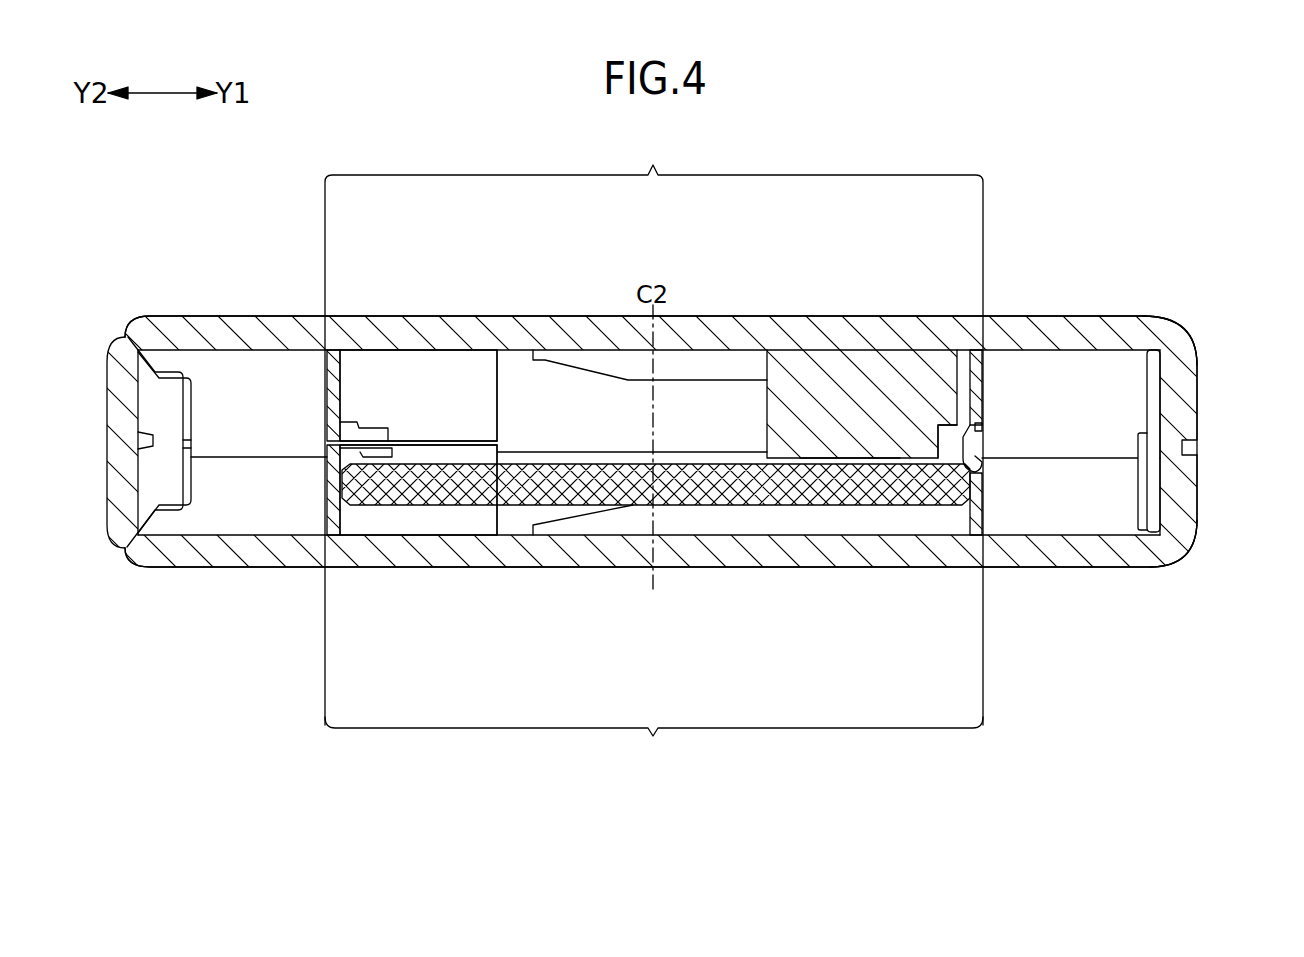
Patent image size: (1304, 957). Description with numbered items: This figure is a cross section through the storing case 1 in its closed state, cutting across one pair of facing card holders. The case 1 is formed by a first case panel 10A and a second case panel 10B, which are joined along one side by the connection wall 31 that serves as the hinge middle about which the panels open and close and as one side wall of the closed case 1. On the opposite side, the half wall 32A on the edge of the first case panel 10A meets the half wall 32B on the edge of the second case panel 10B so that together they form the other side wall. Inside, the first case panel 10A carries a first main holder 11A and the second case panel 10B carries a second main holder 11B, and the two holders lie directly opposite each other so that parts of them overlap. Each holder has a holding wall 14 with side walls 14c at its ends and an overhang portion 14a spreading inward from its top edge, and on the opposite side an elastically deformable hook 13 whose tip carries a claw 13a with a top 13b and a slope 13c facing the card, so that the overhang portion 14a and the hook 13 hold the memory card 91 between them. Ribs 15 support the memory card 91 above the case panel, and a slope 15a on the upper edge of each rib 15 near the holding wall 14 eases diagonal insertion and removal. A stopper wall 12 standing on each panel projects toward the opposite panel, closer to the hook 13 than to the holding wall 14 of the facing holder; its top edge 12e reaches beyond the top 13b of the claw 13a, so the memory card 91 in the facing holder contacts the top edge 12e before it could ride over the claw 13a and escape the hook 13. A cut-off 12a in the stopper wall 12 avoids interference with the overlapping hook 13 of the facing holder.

The storing case 1 is at (1043, 244).
The first case panel 10A is at (232, 327).
The second case panel 10B is at (190, 560).
The first main holder 11A is at (654, 425).
The second main holder 11B is at (654, 745).
The stopper wall 12 is at (780, 413).
The cut-off 12a is at (952, 420).
The top edge 12e is at (826, 464).
The hook 13 is at (977, 512).
The claw 13a is at (978, 424).
The top of the claw 13b is at (962, 432).
The slope 13c is at (975, 468).
The holding wall 14 is at (330, 378).
The overhang portion 14a is at (344, 431).
The side wall 14c is at (413, 358).
The rib 15 is at (728, 372).
The slope 15a is at (546, 362).
The connection wall 31 is at (122, 447).
The half wall 32A is at (1190, 406).
The half wall 32B is at (1190, 492).
The memory card 91 is at (768, 490).